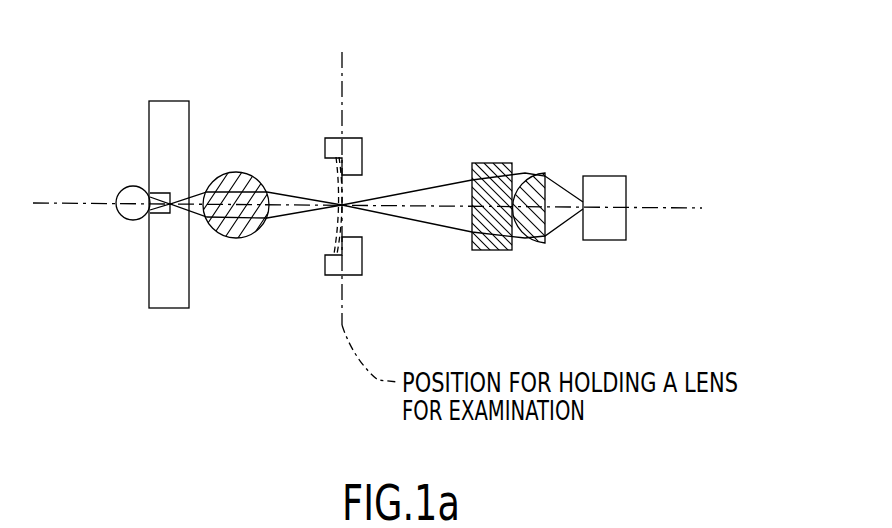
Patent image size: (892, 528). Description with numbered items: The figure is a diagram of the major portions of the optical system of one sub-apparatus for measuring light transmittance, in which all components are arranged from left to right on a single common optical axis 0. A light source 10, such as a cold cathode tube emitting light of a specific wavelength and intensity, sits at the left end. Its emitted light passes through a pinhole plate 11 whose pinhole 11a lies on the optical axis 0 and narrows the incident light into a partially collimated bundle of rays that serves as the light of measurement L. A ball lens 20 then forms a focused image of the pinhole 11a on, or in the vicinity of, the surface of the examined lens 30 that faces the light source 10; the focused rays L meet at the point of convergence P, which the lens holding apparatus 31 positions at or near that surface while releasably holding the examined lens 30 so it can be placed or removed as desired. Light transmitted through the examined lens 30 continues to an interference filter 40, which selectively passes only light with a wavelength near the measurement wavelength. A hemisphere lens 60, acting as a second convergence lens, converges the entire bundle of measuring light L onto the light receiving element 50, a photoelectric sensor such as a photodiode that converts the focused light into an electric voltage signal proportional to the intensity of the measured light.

The optical axis 0 is at (662, 211).
The light source 10 is at (118, 192).
The pinhole plate 11 is at (167, 298).
The pinhole 11a is at (168, 215).
The ball lens 20 is at (233, 172).
The light of measurement L is at (283, 221).
The point of convergence P is at (340, 204).
The examined lens 30 is at (333, 238).
The lens holding apparatus 31 is at (355, 138).
The interference filter 40 is at (492, 252).
The light receiving element 50 is at (607, 176).
The hemisphere lens 60 is at (543, 175).